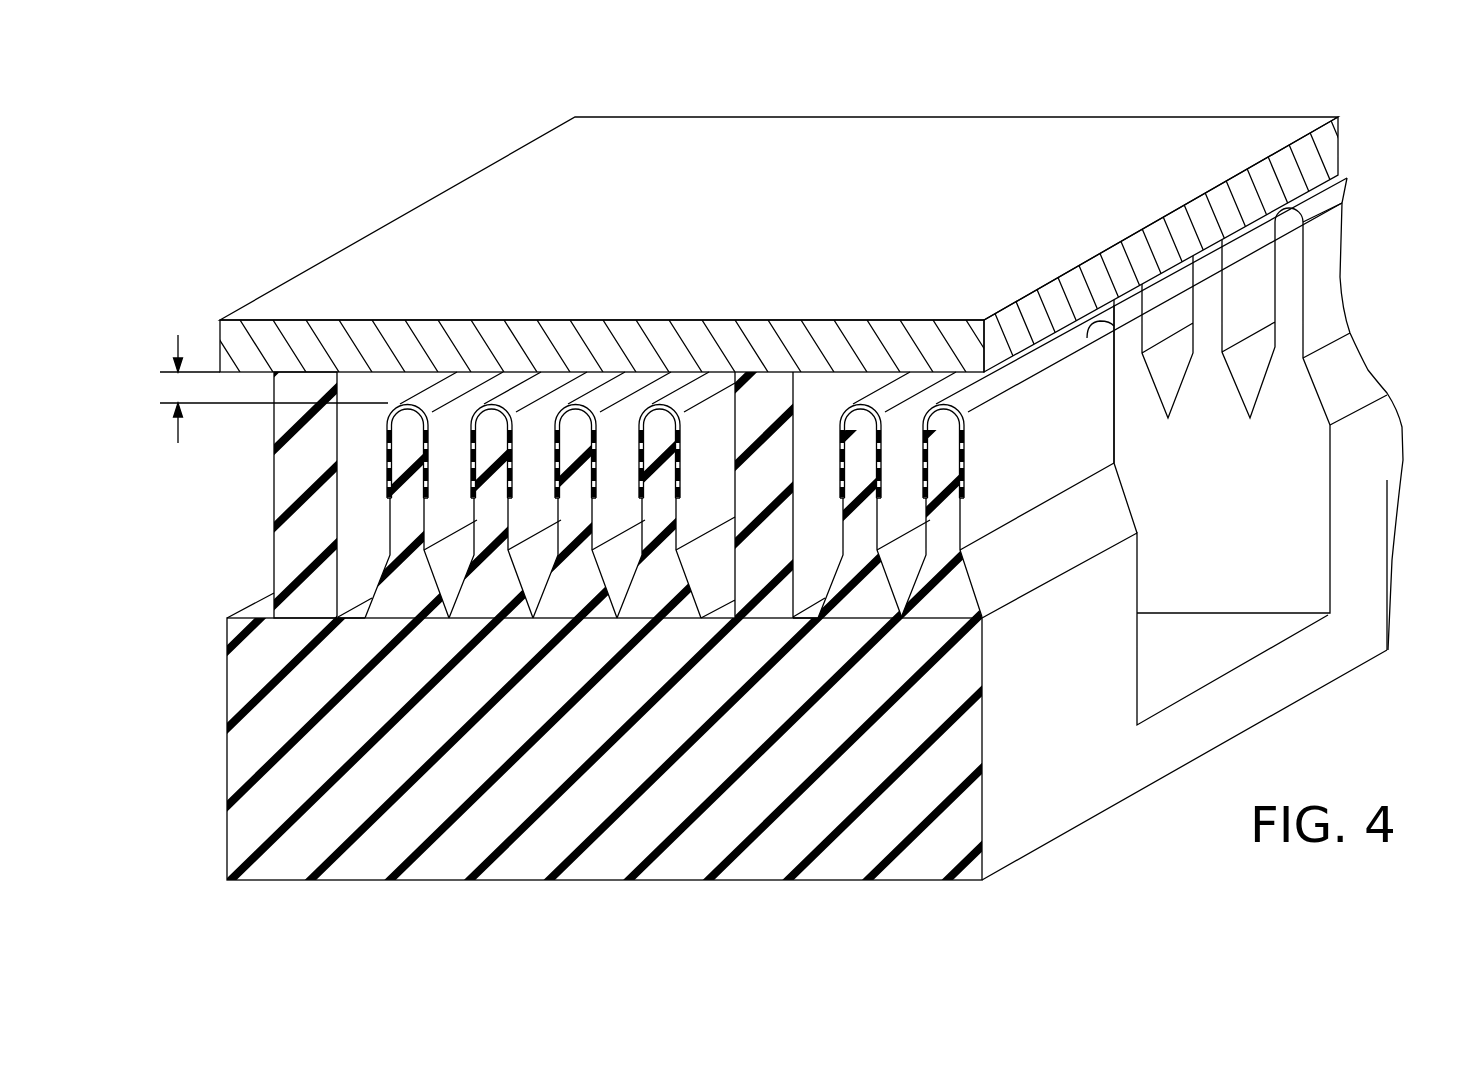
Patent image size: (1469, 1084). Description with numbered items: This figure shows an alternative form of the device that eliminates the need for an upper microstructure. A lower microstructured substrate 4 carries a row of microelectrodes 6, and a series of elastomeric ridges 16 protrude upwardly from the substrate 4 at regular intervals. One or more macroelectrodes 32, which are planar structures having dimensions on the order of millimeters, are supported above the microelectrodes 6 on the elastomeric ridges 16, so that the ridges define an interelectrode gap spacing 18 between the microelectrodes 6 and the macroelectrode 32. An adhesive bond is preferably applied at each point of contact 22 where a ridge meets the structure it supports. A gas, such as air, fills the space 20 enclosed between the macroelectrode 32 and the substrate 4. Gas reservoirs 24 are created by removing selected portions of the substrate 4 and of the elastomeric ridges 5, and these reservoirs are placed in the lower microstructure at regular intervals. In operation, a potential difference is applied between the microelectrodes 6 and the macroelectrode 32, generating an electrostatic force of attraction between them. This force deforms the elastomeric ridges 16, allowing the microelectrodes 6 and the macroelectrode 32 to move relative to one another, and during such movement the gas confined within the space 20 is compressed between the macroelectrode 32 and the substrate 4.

The lower microstructured substrate 4 is at (560, 848).
The elastomeric ridges 5 is at (947, 535).
The microelectrodes 6 is at (972, 453).
The elastomeric ridges 16 is at (290, 499).
The interelectrode gap spacing 18 is at (180, 388).
The space 20 is at (358, 539).
The point of contact 22 is at (303, 360).
The gas reservoirs 24 is at (1210, 498).
The macroelectrode 32 is at (622, 107).